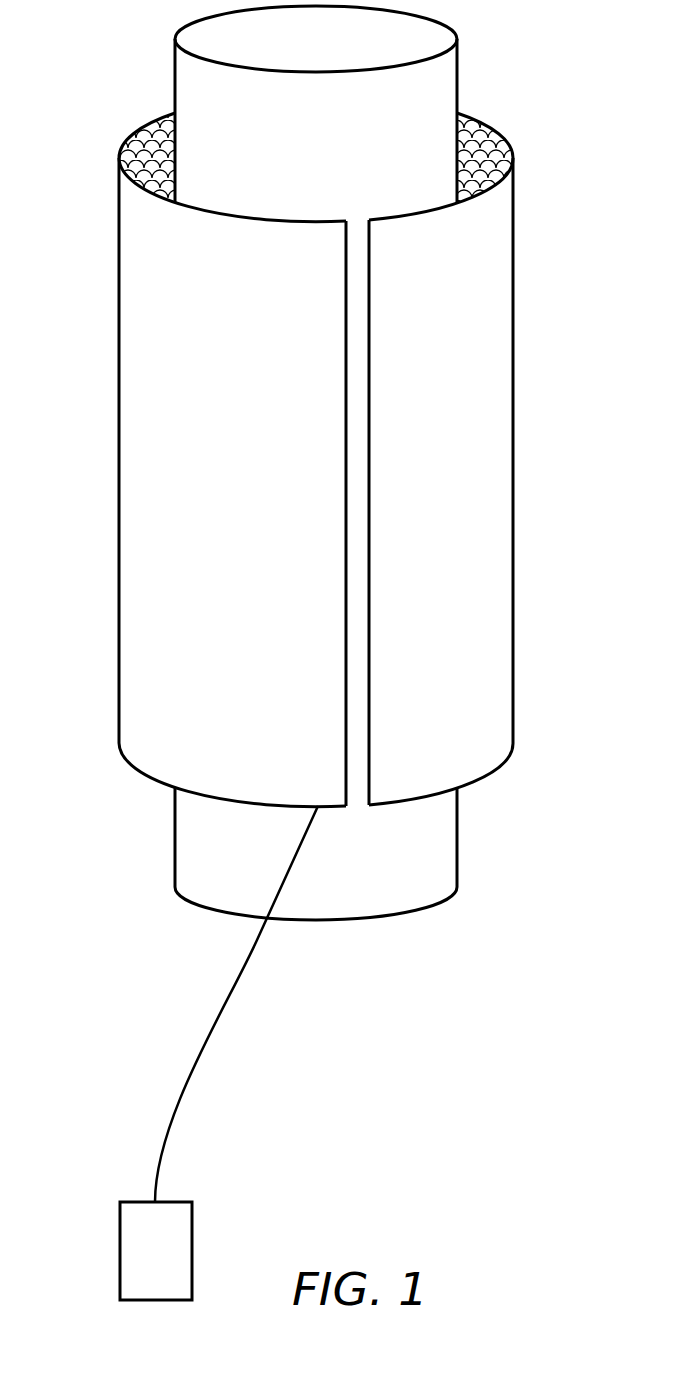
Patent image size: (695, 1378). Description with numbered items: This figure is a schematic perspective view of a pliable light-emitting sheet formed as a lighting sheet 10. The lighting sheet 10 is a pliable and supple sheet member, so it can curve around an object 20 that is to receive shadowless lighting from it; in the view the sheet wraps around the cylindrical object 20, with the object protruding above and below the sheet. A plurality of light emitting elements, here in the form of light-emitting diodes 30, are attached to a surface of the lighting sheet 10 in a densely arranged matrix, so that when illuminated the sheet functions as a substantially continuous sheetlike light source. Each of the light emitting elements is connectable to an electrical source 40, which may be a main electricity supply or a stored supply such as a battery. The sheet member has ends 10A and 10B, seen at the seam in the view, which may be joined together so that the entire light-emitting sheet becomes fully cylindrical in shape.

The lighting sheet 10 is at (363, 460).
The end of the sheet member 10A is at (369, 368).
The end of the sheet member 10B is at (345, 405).
The object 20 is at (427, 908).
The light-emitting diodes 30 is at (135, 142).
The electrical source 40 is at (138, 1247).